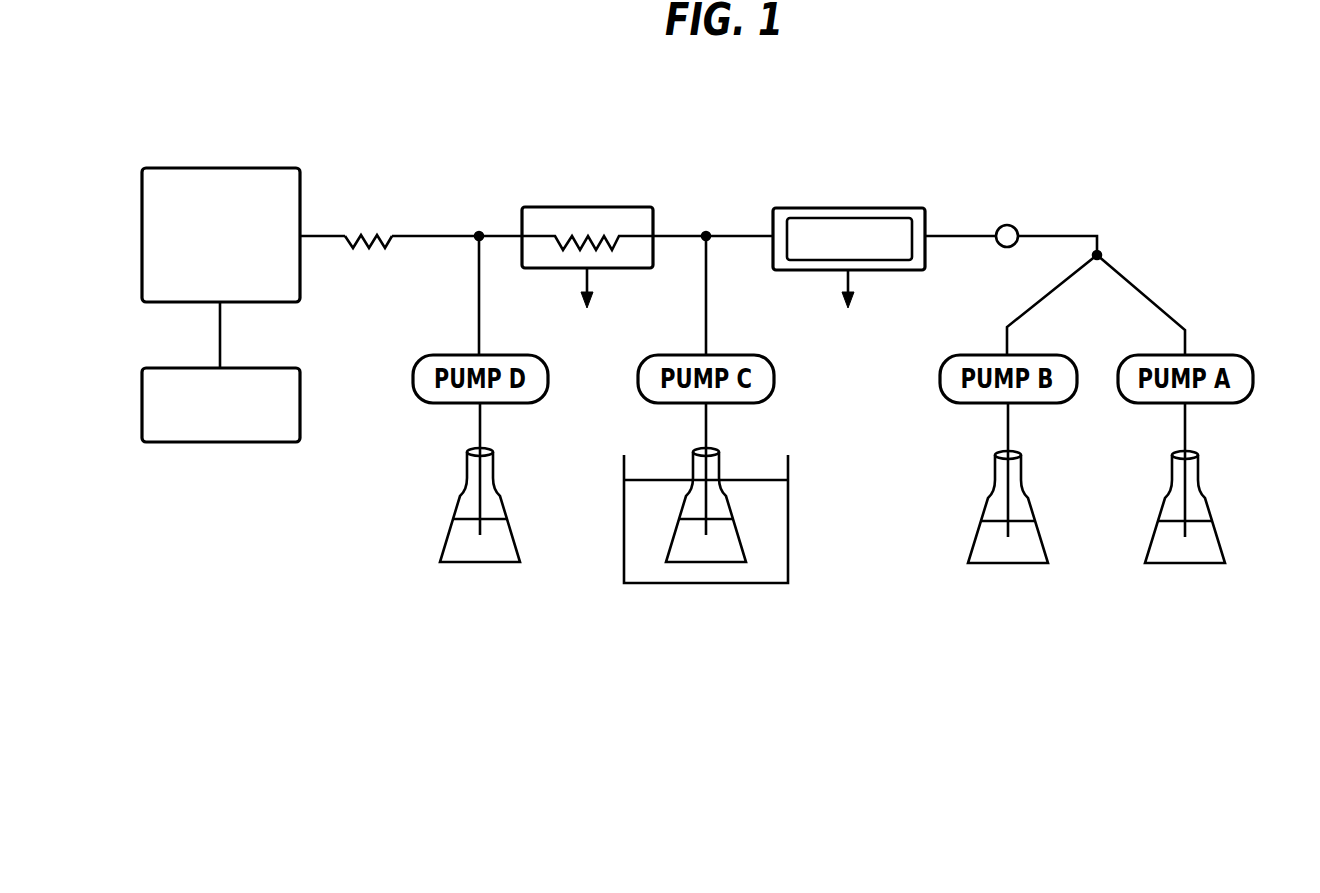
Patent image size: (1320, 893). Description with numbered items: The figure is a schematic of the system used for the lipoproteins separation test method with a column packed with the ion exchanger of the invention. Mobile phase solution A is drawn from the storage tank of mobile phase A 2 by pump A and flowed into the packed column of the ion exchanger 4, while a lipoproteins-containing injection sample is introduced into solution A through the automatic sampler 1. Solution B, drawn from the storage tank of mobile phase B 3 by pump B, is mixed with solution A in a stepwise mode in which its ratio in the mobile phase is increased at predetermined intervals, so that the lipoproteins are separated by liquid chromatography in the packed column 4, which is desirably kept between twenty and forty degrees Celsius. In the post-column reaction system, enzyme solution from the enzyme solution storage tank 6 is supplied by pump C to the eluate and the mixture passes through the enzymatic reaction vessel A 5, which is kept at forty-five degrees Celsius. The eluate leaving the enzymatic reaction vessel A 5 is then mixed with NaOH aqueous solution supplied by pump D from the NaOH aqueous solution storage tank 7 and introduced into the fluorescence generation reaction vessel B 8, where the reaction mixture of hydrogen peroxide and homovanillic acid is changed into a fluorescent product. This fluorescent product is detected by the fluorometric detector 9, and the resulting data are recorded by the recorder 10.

The automatic sampler 1 is at (1012, 225).
The storage tank of mobile phase A 2 is at (1205, 499).
The storage tank of mobile phase B 3 is at (1028, 499).
The packed column of the ion exchanger 4 is at (853, 208).
The enzymatic reaction vessel A 5 is at (588, 207).
The enzyme solution storage tank 6 is at (743, 542).
The NaOH aqueous solution storage tank 7 is at (500, 497).
The fluorescence generation reaction vessel B 8 is at (407, 236).
The fluorometric detector 9 is at (300, 283).
The recorder 10 is at (300, 405).